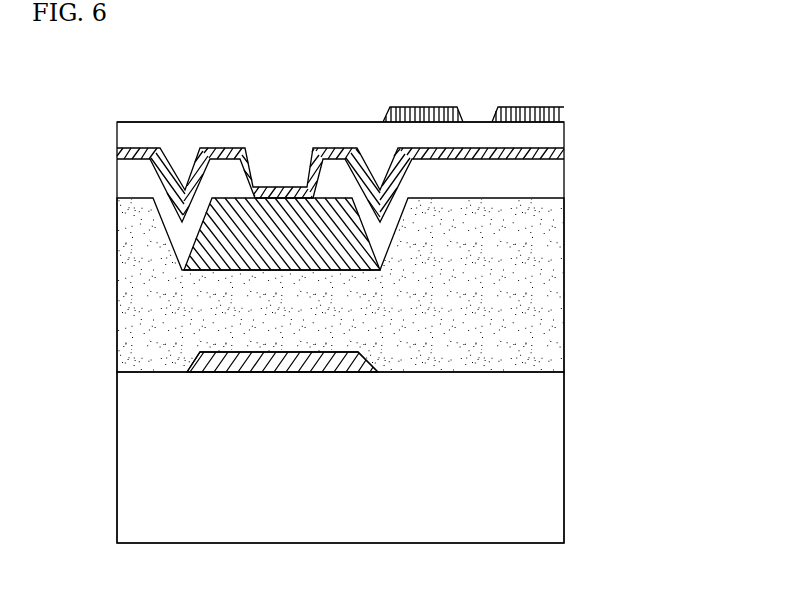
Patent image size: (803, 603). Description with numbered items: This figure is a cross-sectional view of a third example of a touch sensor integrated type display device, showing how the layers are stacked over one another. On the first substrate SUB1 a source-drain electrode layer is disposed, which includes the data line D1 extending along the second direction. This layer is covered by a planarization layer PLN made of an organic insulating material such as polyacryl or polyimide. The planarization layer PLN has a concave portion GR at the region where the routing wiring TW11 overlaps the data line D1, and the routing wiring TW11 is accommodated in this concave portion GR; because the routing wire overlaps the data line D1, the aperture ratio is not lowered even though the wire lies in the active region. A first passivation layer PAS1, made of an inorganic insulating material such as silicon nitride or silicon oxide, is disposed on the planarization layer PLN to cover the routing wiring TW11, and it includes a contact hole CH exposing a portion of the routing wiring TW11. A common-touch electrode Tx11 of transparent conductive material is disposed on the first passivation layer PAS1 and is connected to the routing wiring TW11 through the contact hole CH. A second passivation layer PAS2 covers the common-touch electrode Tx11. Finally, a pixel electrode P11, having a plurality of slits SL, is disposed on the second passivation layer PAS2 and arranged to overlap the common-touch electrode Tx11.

The pixel electrode P11 is at (422, 120).
The slit SL is at (480, 115).
The contact hole CH is at (312, 170).
The concave portion GR is at (378, 188).
The second passivation layer PAS2 is at (558, 134).
The common-touch electrode Tx11 is at (560, 152).
The first passivation layer PAS1 is at (555, 185).
The routing wiring TW11 is at (350, 243).
The planarization layer PLN is at (560, 278).
The data line D1 is at (360, 358).
The first substrate SUB1 is at (558, 433).